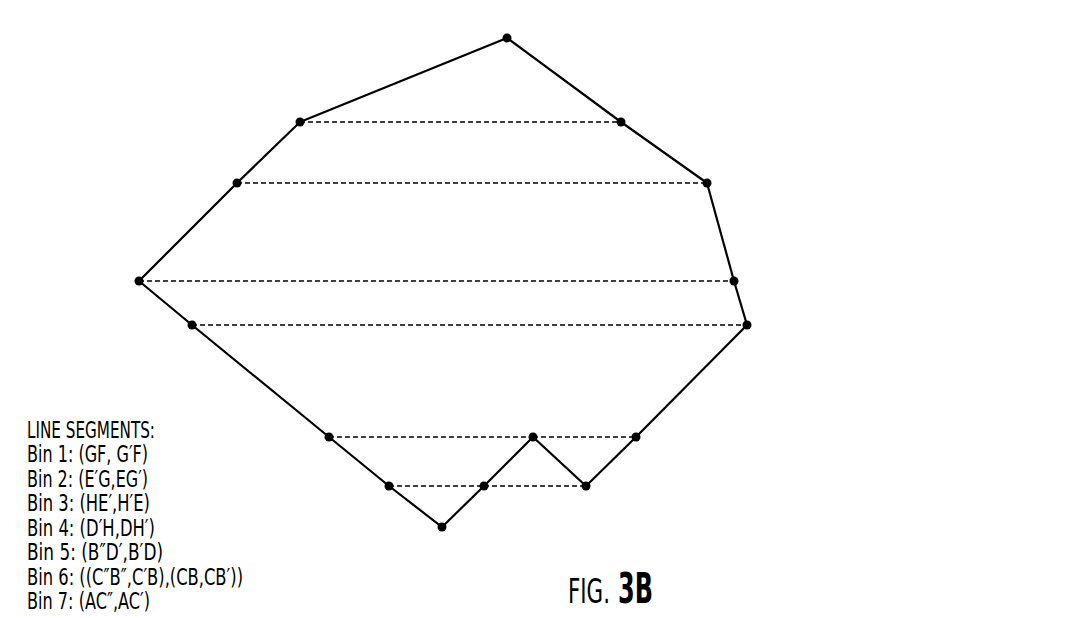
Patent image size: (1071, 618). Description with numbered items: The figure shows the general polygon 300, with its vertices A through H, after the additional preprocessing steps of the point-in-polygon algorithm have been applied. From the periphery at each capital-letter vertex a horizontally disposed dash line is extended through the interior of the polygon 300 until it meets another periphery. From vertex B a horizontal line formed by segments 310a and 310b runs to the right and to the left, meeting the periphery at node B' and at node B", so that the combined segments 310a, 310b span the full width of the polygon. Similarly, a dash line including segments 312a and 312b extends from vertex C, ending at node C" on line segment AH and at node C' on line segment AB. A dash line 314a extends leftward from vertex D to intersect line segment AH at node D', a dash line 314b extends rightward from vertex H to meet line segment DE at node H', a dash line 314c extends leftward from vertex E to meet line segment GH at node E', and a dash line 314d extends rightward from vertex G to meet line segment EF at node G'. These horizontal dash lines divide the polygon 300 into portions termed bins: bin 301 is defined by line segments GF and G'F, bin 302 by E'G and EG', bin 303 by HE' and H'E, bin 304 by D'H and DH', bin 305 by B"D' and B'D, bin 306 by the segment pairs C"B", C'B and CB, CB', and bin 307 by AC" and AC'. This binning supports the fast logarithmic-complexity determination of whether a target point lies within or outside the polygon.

The polygon 300 is at (218, 413).
The bin 301 is at (522, 101).
The bin 302 is at (579, 169).
The bin 303 is at (614, 246).
The bin 304 is at (608, 316).
The bin 305 is at (609, 381).
The bin 306 is at (689, 425).
The bin 307 is at (431, 506).
The horizontal line segment 310a is at (445, 435).
The horizontal line segment 310b is at (613, 435).
The dash line segment 312a is at (552, 488).
The dash line segment 312b is at (453, 483).
The dash line 314a is at (448, 328).
The dash line 314b is at (467, 280).
The dash line 314c is at (415, 185).
The dash line 314d is at (497, 122).